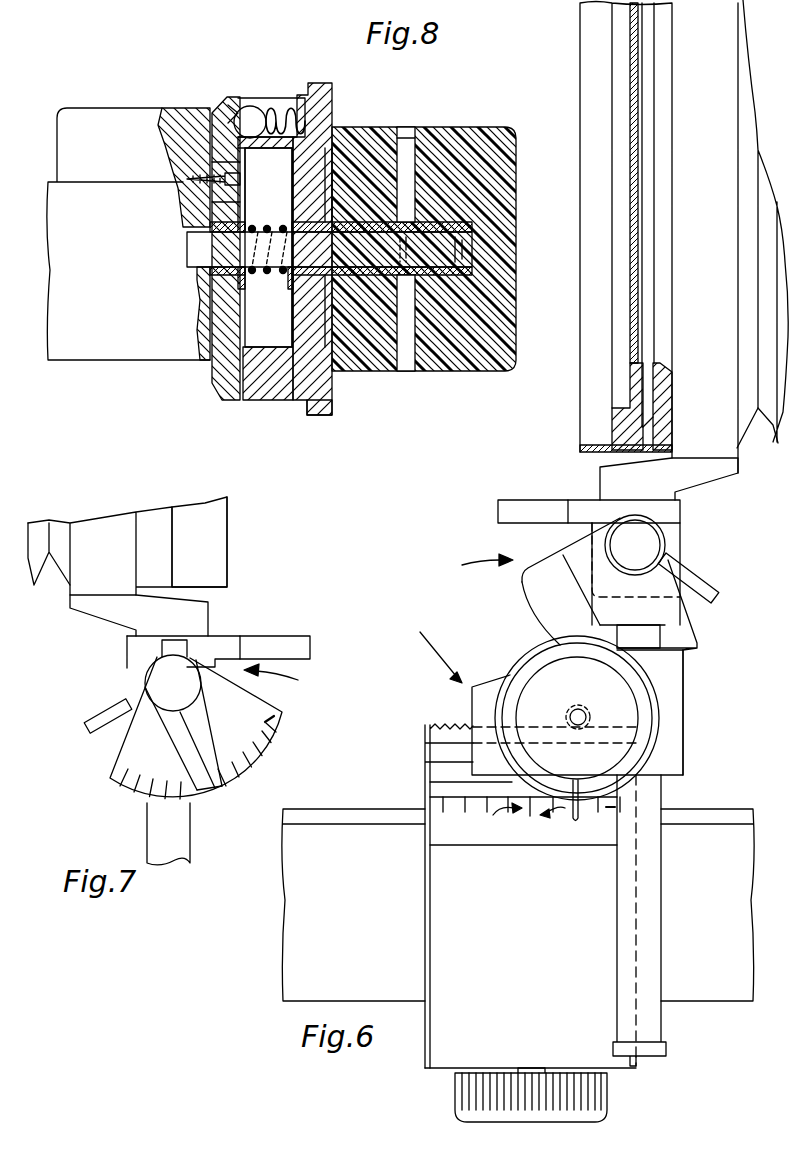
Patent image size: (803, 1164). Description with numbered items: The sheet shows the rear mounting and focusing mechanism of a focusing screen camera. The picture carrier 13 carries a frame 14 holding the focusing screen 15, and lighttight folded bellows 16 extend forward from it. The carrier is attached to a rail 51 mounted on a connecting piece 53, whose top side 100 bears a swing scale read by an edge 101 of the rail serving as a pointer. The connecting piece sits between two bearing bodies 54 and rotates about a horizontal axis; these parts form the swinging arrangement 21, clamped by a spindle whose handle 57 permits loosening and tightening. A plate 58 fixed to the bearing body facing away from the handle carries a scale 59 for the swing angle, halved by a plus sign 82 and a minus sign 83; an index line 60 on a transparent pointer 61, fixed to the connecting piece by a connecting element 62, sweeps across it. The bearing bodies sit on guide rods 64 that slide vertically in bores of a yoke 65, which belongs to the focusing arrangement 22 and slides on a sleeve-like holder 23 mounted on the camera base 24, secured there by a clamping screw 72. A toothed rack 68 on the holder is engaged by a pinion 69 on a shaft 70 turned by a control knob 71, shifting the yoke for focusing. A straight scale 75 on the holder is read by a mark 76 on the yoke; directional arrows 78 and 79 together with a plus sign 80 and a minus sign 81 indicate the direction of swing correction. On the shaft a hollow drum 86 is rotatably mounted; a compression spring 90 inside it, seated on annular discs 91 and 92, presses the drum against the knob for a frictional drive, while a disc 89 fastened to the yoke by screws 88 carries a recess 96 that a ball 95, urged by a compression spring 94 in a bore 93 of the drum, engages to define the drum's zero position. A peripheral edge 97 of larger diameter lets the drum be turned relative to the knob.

In FIG. 7, the picture carrier 13 is at (116, 526).
In FIG. 6, the picture carrier 13 is at (723, 30).
In FIG. 7, the frame 14 is at (222, 536).
In FIG. 6, the frame 14 is at (613, 420).
In FIG. 6, the focusing screen 15 is at (629, 69).
In FIG. 7, the folded bellows 16 is at (42, 583).
In FIG. 6, the folded bellows 16 is at (762, 428).
In FIG. 7, the swinging arrangement 21 is at (286, 680).
In FIG. 6, the swinging arrangement 21 is at (475, 565).
In FIG. 6, the focusing arrangement 22 is at (433, 647).
In FIG. 6, the holder 23 is at (445, 912).
In FIG. 6, the camera base 24 is at (375, 833).
In FIG. 7, the rail 51 is at (101, 612).
In FIG. 6, the rail 51 is at (718, 472).
In FIG. 7, the connecting piece 53 is at (130, 651).
In FIG. 6, the connecting piece 53 is at (683, 515).
In FIG. 6, the bearing bodies 54 is at (580, 548).
In FIG. 7, the handle 57 is at (85, 728).
In FIG. 6, the handle 57 is at (693, 567).
In FIG. 7, the plate 58 is at (108, 770).
In FIG. 6, the plate 58 is at (527, 600).
In FIG. 7, the scale 59 is at (258, 762).
In FIG. 7, the index line 60 is at (200, 731).
In FIG. 7, the pointer 61 is at (218, 790).
In FIG. 7, the connecting element 62 is at (152, 670).
In FIG. 7, the guide rods 64 is at (157, 830).
In FIG. 6, the guide rods 64 is at (656, 796).
In FIG. 8, the yoke 65 is at (101, 360).
In FIG. 6, the yoke 65 is at (680, 678).
In FIG. 6, the toothed rack 68 is at (450, 723).
In FIG. 6, the pinion 69 is at (578, 706).
In FIG. 8, the shaft 70 is at (198, 250).
In FIG. 6, the shaft 70 is at (588, 716).
In FIG. 8, the control knob 71 is at (457, 127).
In FIG. 6, the control knob 71 is at (520, 680).
In FIG. 6, the clamping screw 72 is at (456, 1088).
In FIG. 6, the scale 75 is at (474, 809).
In FIG. 6, the mark 76 is at (578, 810).
In FIG. 6, the directional arrow 78 is at (558, 812).
In FIG. 6, the directional arrow 79 is at (505, 810).
In FIG. 6, the plus sign 80 is at (443, 809).
In FIG. 6, the minus sign 81 is at (613, 811).
In FIG. 7, the plus sign 82 is at (116, 782).
In FIG. 7, the minus sign 83 is at (285, 713).
In FIG. 8, the drum 86 is at (278, 402).
In FIG. 8, the screws 88 is at (190, 175).
In FIG. 8, the disc 89 is at (215, 385).
In FIG. 8, the compression spring 90 is at (262, 222).
In FIG. 8, the annular disc 91 is at (246, 280).
In FIG. 8, the annular disc 92 is at (290, 282).
In FIG. 8, the bore 93 is at (322, 100).
In FIG. 8, the compression spring 94 is at (285, 106).
In FIG. 8, the ball 95 is at (250, 108).
In FIG. 8, the recess 96 is at (228, 105).
In FIG. 8, the peripheral edge 97 is at (335, 410).
In FIG. 6, the peripheral edge 97 is at (667, 707).
In FIG. 7, the top side 100 is at (276, 636).
In FIG. 6, the top side 100 is at (533, 497).
In FIG. 7, the edge 101 is at (226, 636).
In FIG. 6, the edge 101 is at (598, 497).